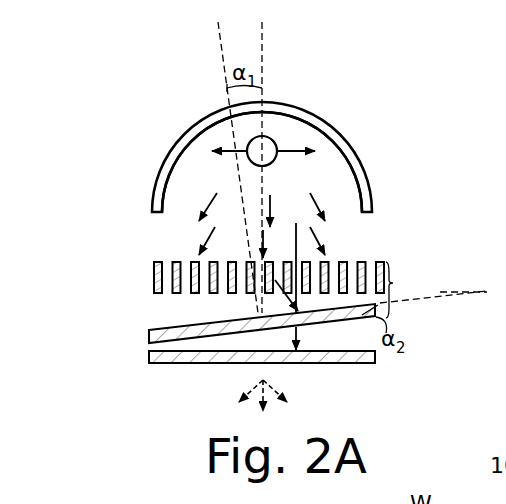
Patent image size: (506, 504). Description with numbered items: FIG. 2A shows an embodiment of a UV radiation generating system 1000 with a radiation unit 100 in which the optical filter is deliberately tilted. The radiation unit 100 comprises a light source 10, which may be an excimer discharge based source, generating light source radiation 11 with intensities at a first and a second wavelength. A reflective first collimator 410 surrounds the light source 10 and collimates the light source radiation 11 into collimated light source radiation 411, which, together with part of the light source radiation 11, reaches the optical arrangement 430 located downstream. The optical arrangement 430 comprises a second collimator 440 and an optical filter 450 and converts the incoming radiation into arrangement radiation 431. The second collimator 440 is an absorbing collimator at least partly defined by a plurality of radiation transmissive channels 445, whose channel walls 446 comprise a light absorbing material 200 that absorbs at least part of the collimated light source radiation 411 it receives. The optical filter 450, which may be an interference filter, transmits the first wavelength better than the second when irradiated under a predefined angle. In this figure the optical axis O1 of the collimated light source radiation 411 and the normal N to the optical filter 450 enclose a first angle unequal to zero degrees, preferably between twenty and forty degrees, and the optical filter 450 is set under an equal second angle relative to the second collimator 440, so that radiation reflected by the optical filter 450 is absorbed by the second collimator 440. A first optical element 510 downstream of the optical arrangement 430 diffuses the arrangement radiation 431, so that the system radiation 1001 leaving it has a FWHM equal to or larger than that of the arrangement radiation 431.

The radiation unit 100 is at (120, 67).
The radiation generating system 1000 is at (338, 75).
The light source 10 is at (272, 134).
The light source radiation 11 is at (220, 143).
The first collimator 410 is at (157, 183).
The collimated light source radiation 411 is at (325, 192).
The second collimator 440 is at (143, 283).
The channel walls 446 is at (361, 262).
The light absorbing material 200 is at (380, 262).
The optical arrangement 430 is at (413, 290).
The arrangement radiation 431 is at (299, 333).
The optical filter 450 is at (145, 338).
The first optical element 510 is at (147, 360).
The radiation transmissive channels 445 is at (203, 287).
The system radiation 1001 is at (268, 397).
The normal to the optical filter N is at (226, 60).
The optical axis of collimated light source radiation O1 is at (262, 40).